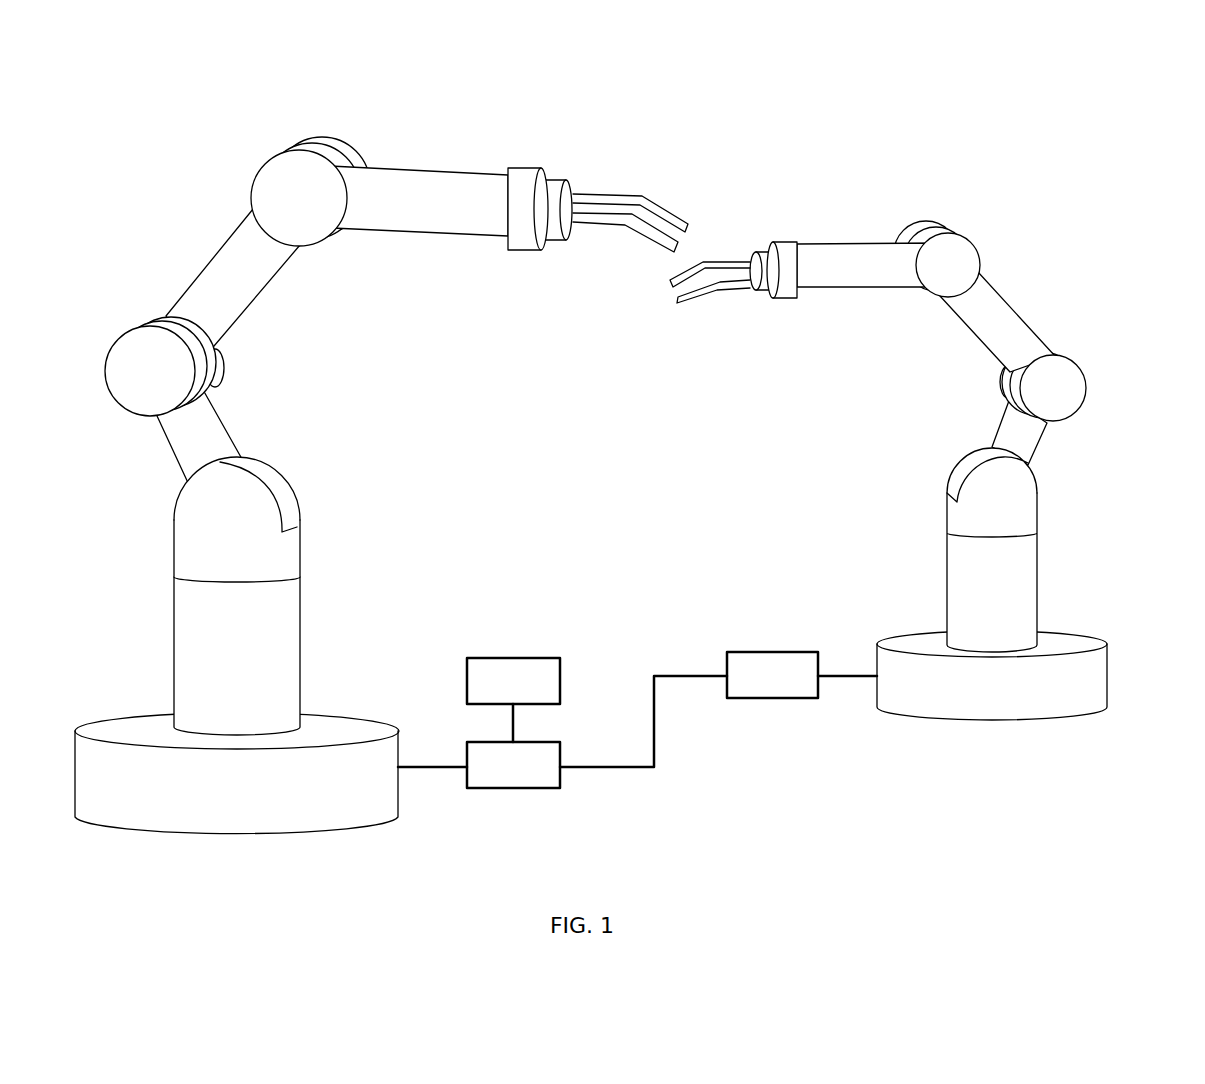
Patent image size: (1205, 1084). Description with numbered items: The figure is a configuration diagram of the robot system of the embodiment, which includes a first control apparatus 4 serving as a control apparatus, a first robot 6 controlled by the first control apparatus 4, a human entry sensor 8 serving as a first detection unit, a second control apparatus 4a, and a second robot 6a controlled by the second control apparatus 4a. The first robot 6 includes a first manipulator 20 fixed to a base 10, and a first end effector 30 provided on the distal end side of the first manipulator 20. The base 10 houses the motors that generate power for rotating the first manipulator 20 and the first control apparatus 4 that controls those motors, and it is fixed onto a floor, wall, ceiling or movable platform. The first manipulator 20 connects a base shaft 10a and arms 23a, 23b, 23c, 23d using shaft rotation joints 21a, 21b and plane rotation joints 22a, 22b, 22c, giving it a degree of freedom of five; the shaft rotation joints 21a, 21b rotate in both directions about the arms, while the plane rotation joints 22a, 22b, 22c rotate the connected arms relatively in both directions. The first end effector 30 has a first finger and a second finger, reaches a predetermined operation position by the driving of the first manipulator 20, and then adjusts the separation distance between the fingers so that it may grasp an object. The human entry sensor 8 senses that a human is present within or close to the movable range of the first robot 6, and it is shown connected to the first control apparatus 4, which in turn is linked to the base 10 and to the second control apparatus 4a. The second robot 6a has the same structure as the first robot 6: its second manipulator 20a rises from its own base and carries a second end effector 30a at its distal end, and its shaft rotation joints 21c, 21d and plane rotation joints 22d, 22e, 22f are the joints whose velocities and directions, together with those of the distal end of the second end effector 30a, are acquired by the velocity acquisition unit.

The first robot 6 is at (160, 178).
The second robot 6a is at (985, 182).
The base 10 is at (90, 781).
The base shaft 10a is at (293, 649).
The first manipulator 20 is at (158, 273).
The second manipulator 20a is at (1023, 263).
The shaft rotation joint 21a is at (300, 572).
The shaft rotation joint 21b is at (528, 232).
The shaft rotation joint 21c is at (1012, 530).
The shaft rotation joint 21d is at (785, 288).
The plane rotation joint 22a is at (263, 493).
The plane rotation joint 22b is at (130, 378).
The plane rotation joint 22c is at (283, 177).
The plane rotation joint 22d is at (1005, 467).
The plane rotation joint 22e is at (1052, 397).
The plane rotation joint 22f is at (940, 253).
The arm 23a is at (275, 553).
The arm 23b is at (212, 428).
The arm 23c is at (223, 272).
The arm 23d is at (420, 203).
The first end effector 30 is at (665, 205).
The second end effector 30a is at (720, 304).
The first control apparatus 4 is at (538, 777).
The second control apparatus 4a is at (788, 665).
The human entry sensor 8 is at (531, 672).